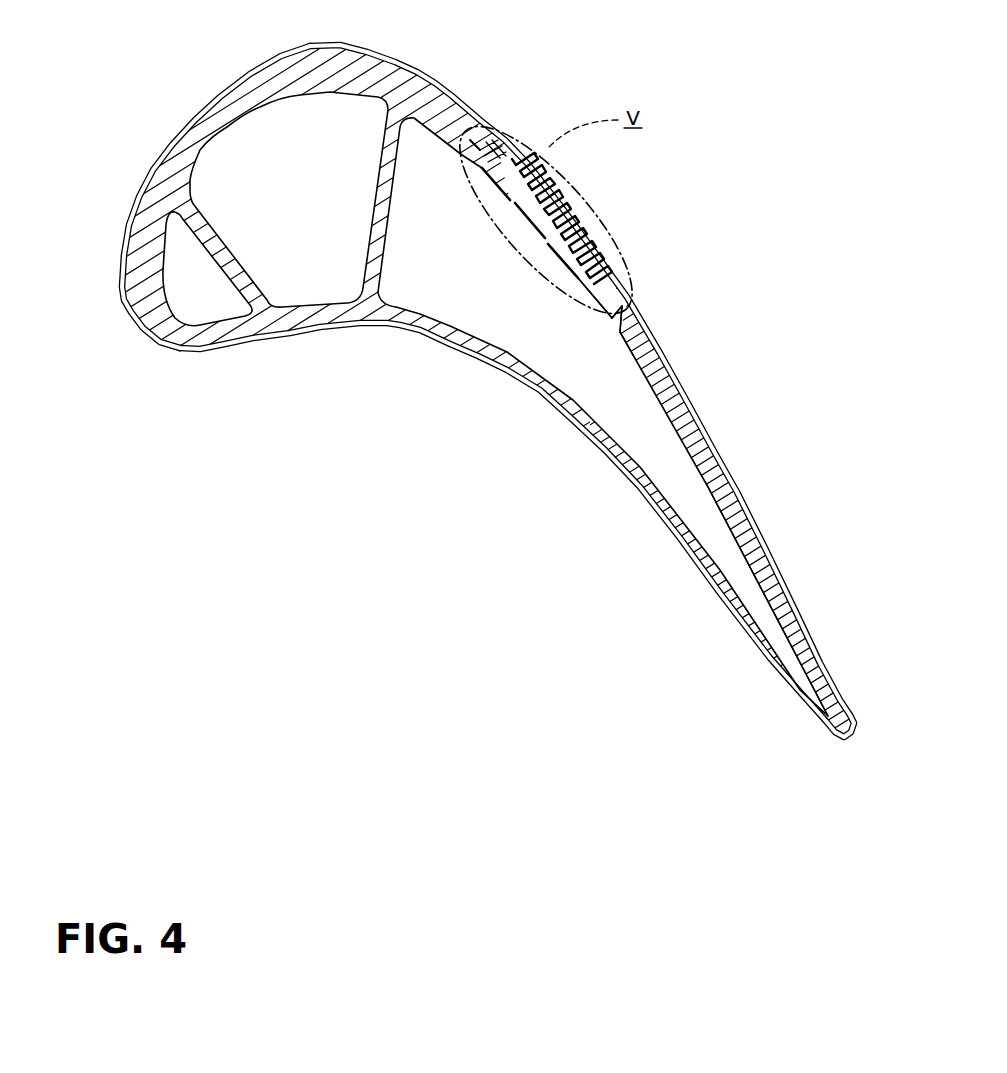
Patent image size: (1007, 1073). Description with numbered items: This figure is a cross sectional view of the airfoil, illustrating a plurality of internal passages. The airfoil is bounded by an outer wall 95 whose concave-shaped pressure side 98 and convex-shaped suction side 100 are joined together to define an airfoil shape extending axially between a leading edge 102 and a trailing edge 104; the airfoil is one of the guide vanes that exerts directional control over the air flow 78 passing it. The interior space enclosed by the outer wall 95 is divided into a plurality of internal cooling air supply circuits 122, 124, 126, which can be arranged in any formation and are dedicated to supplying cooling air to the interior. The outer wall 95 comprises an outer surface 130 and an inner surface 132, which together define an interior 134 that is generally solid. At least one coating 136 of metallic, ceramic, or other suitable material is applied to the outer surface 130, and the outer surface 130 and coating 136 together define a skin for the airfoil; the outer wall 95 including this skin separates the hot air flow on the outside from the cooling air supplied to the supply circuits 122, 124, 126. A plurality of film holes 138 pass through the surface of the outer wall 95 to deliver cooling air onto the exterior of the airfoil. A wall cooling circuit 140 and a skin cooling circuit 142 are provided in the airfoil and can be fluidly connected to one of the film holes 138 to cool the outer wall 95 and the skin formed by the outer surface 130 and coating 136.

The air flow 78 is at (653, 225).
The outer wall 95 is at (746, 490).
The pressure side 98 is at (520, 385).
The suction side 100 is at (673, 374).
The leading edge 102 is at (121, 292).
The trailing edge 104 is at (846, 740).
The internal cooling air supply circuit 122 is at (298, 186).
The internal cooling air supply circuit 124 is at (434, 277).
The internal cooling air supply circuit 126 is at (193, 302).
The outer surface 130 is at (623, 302).
The inner surface 132 is at (605, 310).
The interior 134 is at (630, 340).
The coating 136 is at (638, 330).
The film holes 138 is at (528, 157).
The wall cooling circuit 140 is at (470, 140).
The skin cooling circuit 142 is at (478, 152).